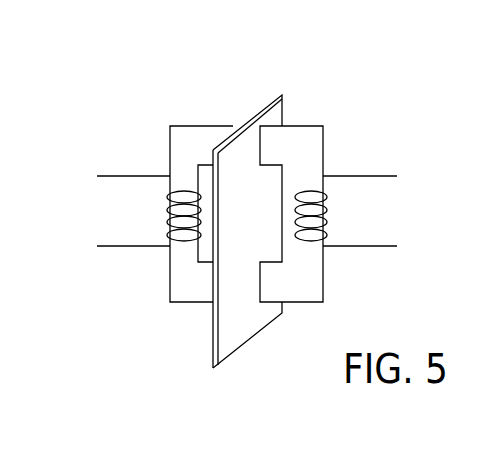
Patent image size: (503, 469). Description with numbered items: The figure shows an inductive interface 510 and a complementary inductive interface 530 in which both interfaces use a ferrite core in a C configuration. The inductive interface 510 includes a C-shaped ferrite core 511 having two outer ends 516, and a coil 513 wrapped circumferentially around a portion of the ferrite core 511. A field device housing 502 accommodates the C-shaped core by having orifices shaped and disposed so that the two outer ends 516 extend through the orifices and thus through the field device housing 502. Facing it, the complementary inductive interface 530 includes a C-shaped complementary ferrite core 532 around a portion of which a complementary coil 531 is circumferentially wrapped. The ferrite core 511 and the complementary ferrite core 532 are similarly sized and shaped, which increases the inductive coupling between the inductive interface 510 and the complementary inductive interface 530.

The field device housing 502 is at (270, 115).
The inductive interface 510 is at (346, 102).
The ferrite core 511 is at (312, 147).
The coil 513 is at (327, 197).
The outer ends 516 is at (256, 148).
The complementary inductive interface 530 is at (122, 124).
The complementary coil 531 is at (170, 195).
The complementary ferrite core 532 is at (197, 140).